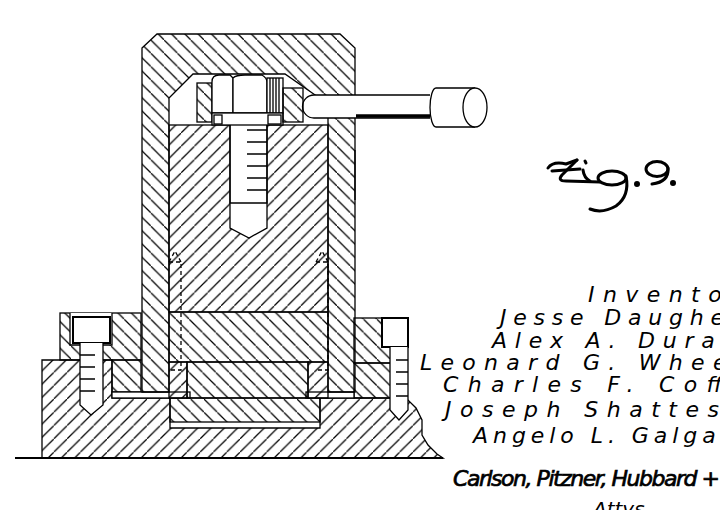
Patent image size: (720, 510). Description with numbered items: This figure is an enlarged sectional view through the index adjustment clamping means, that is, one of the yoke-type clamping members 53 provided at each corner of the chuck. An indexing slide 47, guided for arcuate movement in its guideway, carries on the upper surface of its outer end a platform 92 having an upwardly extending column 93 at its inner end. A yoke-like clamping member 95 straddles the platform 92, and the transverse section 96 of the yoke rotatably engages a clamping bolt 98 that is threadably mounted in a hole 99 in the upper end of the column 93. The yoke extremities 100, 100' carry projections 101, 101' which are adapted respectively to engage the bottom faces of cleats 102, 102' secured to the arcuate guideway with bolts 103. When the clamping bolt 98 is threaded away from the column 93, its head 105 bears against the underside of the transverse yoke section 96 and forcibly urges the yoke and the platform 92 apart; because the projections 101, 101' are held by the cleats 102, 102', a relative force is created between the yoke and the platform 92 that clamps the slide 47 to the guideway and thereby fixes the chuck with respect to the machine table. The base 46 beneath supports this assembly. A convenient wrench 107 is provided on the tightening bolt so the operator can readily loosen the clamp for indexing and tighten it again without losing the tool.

The base 46 is at (137, 455).
The indexing slide 47 is at (217, 415).
The yoke-type clamping member 53 is at (360, 80).
The platform 92 is at (343, 292).
The column 93 is at (330, 240).
The yoke-like clamping member 95 is at (357, 178).
The transverse section of the yoke 96 is at (198, 52).
The clamping bolt 98 is at (243, 180).
The hole 99 is at (268, 207).
The yoke extremity 100 is at (358, 310).
The yoke extremity 100' is at (133, 291).
The projection 101 is at (349, 425).
The projection 101' is at (155, 422).
The cleat 102 is at (392, 324).
The cleat 102' is at (80, 336).
The bolt 103 is at (75, 328).
The head of the clamping bolt 105 is at (250, 82).
The wrench 107 is at (409, 103).